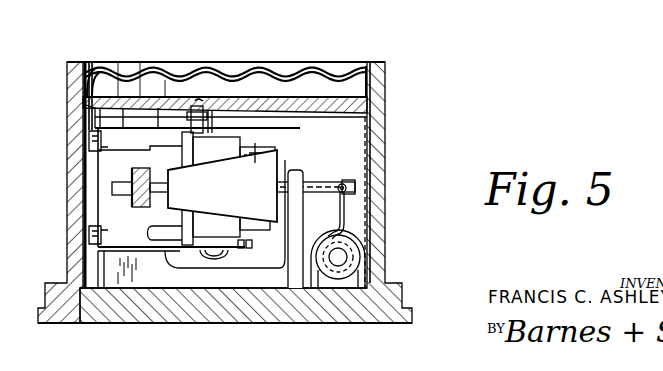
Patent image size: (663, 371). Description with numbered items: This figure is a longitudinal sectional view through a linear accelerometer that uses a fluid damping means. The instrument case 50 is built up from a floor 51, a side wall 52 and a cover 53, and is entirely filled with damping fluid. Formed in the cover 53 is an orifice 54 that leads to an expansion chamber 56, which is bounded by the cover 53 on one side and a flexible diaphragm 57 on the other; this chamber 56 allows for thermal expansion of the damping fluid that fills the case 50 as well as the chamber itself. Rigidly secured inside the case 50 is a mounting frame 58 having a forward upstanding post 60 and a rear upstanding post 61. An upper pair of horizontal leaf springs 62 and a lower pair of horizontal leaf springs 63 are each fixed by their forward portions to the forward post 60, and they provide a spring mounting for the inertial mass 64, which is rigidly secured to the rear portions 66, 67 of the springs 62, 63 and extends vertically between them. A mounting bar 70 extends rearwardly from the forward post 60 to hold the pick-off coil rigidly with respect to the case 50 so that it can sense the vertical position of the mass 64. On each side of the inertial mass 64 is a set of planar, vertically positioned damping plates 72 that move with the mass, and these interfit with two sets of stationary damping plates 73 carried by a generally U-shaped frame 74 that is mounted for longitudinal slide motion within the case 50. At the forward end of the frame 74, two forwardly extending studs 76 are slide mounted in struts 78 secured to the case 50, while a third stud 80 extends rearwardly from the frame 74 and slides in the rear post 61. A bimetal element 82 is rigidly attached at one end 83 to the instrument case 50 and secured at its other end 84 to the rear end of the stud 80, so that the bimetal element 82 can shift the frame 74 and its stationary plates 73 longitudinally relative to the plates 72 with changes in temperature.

The instrument case 50 is at (387, 91).
The floor 51 is at (292, 312).
The side wall 52 is at (378, 193).
The cover 53 is at (305, 103).
The orifice 54 is at (243, 100).
The expansion chamber 56 is at (215, 84).
The flexible diaphragm 57 is at (182, 70).
The mounting frame 58 is at (214, 290).
The forward upstanding post 60 is at (92, 153).
The rear upstanding post 61 is at (299, 170).
The upper pair of horizontal leaf springs 62 is at (82, 110).
The lower pair of horizontal leaf springs 63 is at (143, 250).
The inertial mass 64 is at (253, 246).
The rear portion of upper springs 66 is at (214, 128).
The rear portion of lower springs 67 is at (230, 253).
The mounting bar 70 is at (123, 240).
The damping plates 72 is at (203, 158).
The stationary damping plates 73 is at (257, 151).
The U-shaped frame 74 is at (228, 198).
The forwardly extending studs 76 is at (112, 192).
The struts 78 is at (132, 173).
The third stud 80 is at (320, 193).
The bimetal element 82 is at (342, 229).
The attachment point of bimetal element to case 83 is at (345, 258).
The attachment point of bimetal element to stud 84 is at (342, 184).